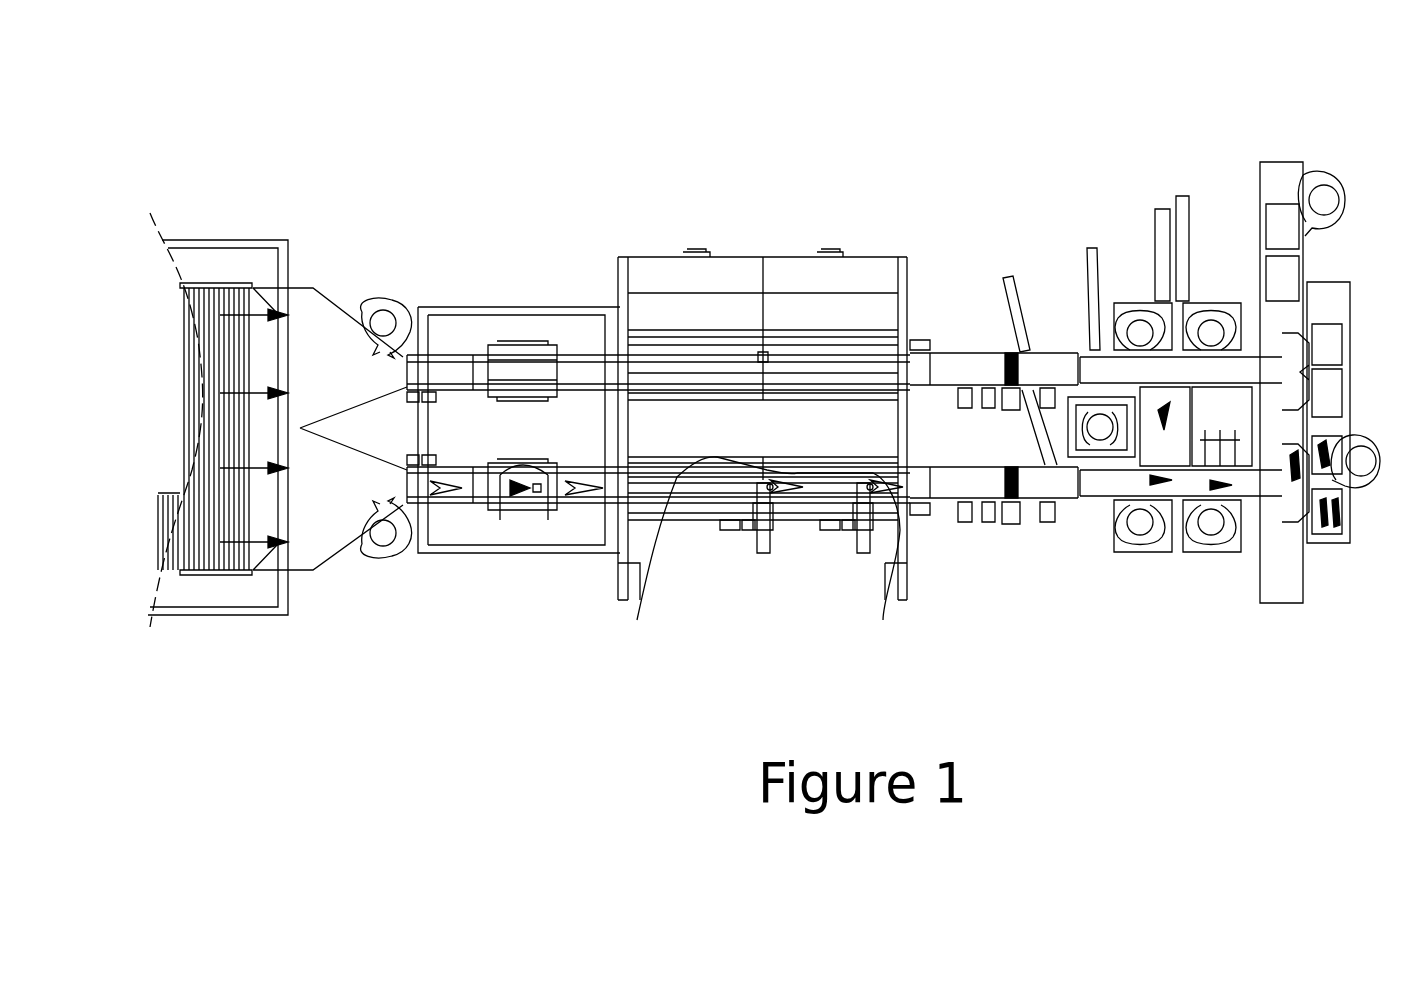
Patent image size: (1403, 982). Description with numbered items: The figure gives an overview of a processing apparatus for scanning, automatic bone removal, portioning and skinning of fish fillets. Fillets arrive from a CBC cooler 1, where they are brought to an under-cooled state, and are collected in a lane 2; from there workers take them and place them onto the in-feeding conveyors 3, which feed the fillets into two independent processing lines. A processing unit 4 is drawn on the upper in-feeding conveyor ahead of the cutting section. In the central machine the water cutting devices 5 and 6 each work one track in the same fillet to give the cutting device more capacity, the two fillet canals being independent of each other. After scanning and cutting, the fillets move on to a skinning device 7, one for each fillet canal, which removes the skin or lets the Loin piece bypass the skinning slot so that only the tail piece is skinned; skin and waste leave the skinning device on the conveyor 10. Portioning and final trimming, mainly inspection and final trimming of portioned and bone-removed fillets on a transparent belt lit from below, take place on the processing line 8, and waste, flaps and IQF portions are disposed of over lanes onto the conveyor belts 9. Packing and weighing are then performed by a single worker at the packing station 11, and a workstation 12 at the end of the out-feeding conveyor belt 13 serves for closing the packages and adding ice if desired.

The CBC cooler 1 is at (228, 252).
The lane 2 is at (330, 330).
The in-feeding conveyors 3 is at (428, 368).
The processing unit 4 is at (525, 363).
The water cutting device 5 is at (737, 530).
The water cutting device 6 is at (832, 530).
The skinning device 7 is at (1005, 498).
The processing line 8 is at (1103, 483).
The conveyor belts 9 is at (1172, 222).
The conveyor 10 is at (1037, 353).
The packing station 11 is at (1312, 489).
The workstation 12 is at (1314, 177).
The out feeding conveyor belt 13 is at (1280, 174).